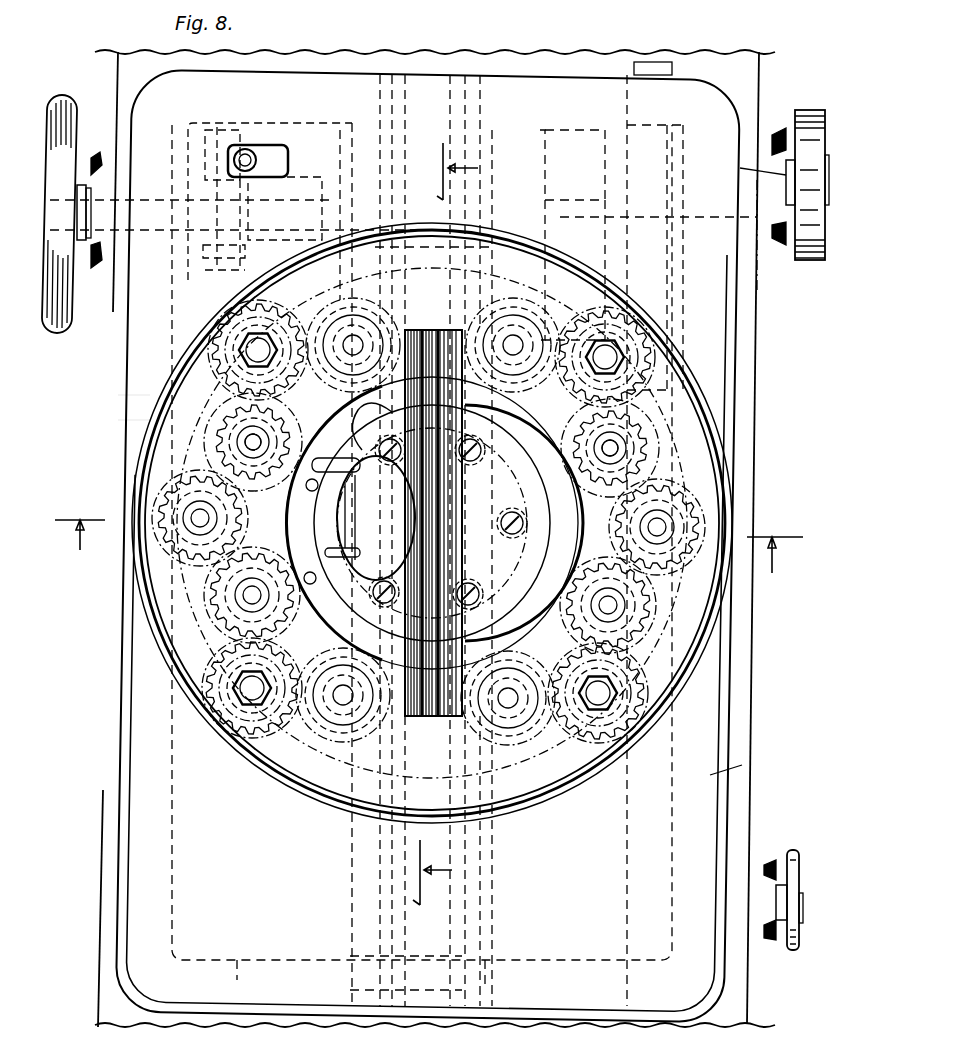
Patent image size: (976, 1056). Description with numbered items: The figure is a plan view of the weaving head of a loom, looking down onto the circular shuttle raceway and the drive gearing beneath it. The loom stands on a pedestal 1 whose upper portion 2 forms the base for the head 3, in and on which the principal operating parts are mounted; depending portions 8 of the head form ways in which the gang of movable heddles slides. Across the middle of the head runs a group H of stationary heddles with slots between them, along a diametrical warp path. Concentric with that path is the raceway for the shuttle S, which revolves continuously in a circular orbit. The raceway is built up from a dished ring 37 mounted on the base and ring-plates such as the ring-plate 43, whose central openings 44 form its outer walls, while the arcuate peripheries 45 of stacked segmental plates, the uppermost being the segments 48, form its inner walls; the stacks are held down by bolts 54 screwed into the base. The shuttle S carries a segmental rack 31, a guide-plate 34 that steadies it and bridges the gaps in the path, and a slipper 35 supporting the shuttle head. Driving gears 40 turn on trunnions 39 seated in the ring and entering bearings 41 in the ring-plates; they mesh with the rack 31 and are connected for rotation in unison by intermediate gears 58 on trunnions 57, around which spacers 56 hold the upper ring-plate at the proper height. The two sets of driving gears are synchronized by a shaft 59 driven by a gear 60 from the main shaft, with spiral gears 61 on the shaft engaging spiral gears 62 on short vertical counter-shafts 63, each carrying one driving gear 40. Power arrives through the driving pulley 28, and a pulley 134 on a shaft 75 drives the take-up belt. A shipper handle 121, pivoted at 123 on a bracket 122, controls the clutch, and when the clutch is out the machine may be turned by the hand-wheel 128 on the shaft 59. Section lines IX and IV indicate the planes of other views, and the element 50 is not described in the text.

The pedestal 1 is at (754, 56).
The upper portion of pedestal 2 is at (722, 113).
The head 3 is at (742, 765).
The depending portions of head 8 is at (345, 905).
The driving pulley 28 is at (802, 262).
The segmental rack 31 is at (285, 520).
The guide-plate 34 is at (290, 600).
The slipper 35 is at (330, 480).
The dished ring 37 is at (150, 413).
The trunnions 39 is at (253, 442).
The driving gears 40 is at (290, 385).
The bearings 41 is at (262, 425).
The ring-plate 43 is at (150, 420).
The central openings 44 is at (580, 495).
The arcuate peripheries 45 is at (560, 520).
The segmental plates 48 is at (565, 560).
The dial ring 50 is at (185, 378).
The bolts 54 is at (475, 445).
The spacers 56 is at (235, 750).
The trunnions of intermediate gears 57 is at (258, 350).
The intermediate gears 58 is at (188, 352).
The shaft 59 is at (769, 235).
The gear 60 is at (672, 73).
The spiral gears 61 is at (360, 128).
The spiral gears 62 is at (332, 300).
The counter-shafts 63 is at (353, 345).
The shaft 75 is at (746, 170).
The shipper handle 121 is at (250, 158).
The bracket 122 is at (305, 178).
The pivot 123 is at (240, 115).
The hand-wheel 128 is at (62, 335).
The pulley 134 is at (792, 950).
The shuttle S is at (415, 522).
The group of stationary heddles H is at (433, 523).
The section line IX is at (432, 524).
The section line IV is at (429, 535).